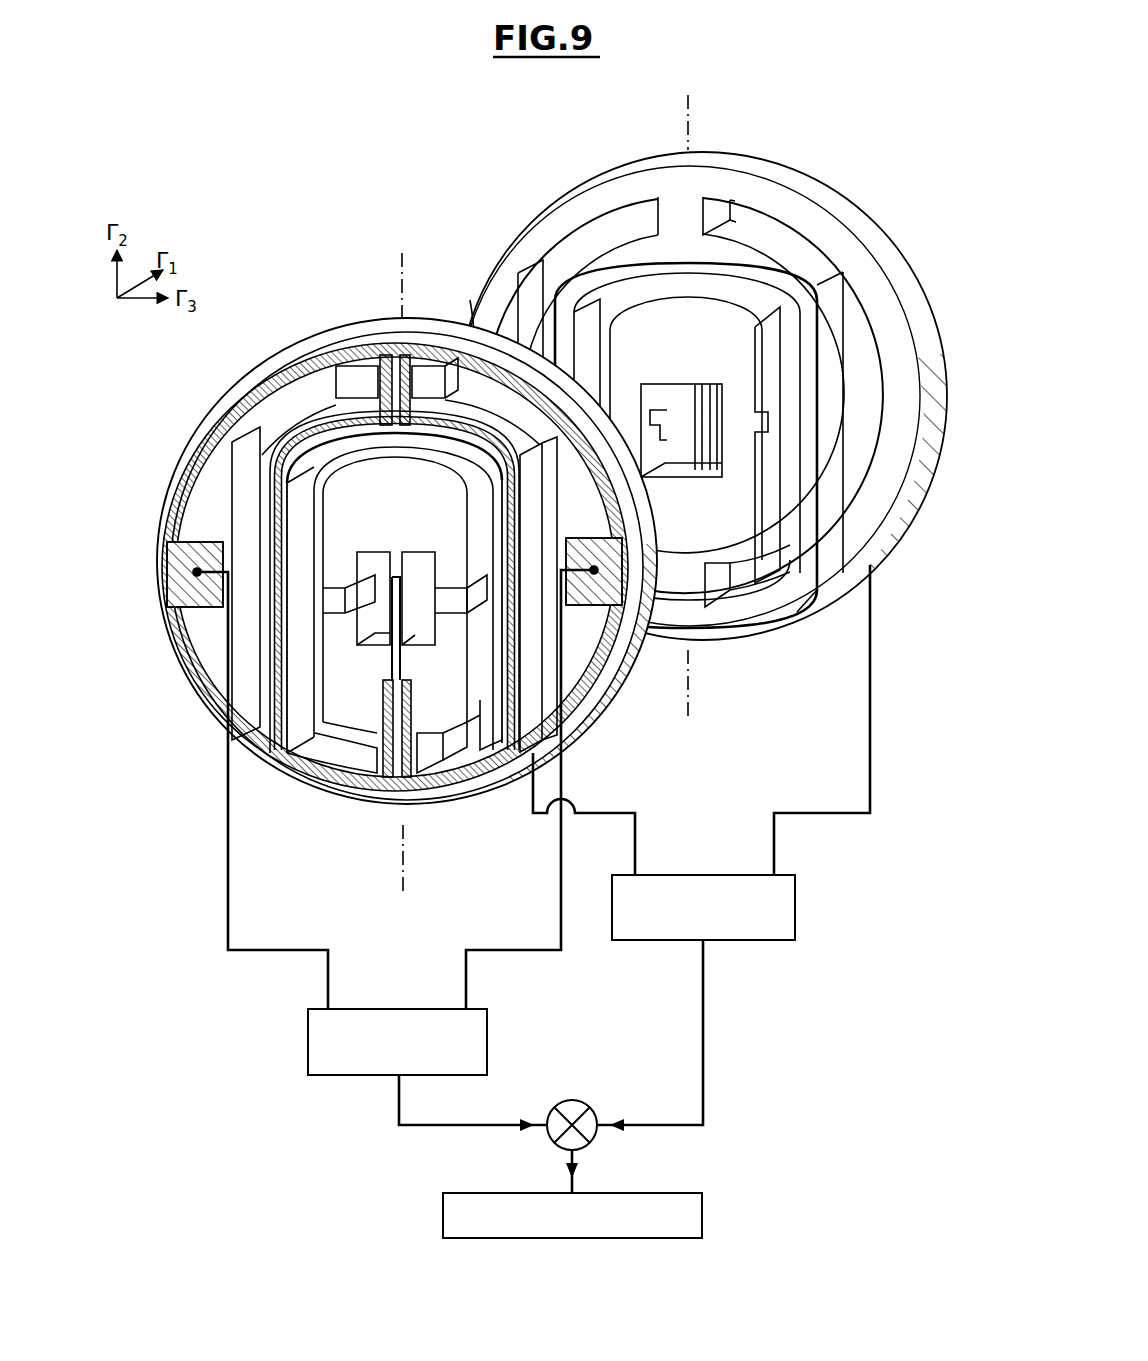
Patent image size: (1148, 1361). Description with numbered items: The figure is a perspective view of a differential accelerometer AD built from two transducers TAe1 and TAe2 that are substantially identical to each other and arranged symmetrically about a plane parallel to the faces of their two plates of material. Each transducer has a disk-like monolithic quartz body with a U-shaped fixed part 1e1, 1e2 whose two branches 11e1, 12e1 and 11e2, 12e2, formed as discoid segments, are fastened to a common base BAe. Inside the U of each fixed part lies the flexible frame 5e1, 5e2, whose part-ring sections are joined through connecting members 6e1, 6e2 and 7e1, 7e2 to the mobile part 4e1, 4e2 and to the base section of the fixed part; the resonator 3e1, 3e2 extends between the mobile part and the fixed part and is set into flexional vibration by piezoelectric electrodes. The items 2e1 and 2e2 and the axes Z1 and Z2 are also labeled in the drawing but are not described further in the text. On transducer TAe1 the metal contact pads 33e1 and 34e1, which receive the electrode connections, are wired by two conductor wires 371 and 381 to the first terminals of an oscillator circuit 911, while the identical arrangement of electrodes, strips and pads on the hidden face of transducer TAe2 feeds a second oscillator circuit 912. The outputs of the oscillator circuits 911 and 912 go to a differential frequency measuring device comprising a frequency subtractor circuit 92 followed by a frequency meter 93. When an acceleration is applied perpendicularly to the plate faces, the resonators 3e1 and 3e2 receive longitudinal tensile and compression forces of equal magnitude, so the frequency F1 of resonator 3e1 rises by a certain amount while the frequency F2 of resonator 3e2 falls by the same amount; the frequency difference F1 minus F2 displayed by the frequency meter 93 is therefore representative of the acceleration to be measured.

The differential accelerometer AD is at (305, 130).
The first transducer TAe1 is at (242, 307).
The second transducer TAe2 is at (503, 140).
The fixed part 1e1 is at (367, 317).
The fixed part 1e2 is at (696, 409).
The first dome shaped member 2e1 is at (400, 455).
The second dome shaped member 2e2 is at (667, 293).
The resonator 3e1 is at (407, 598).
The resonator 3e2 is at (700, 440).
The mobile part 4e1 is at (480, 703).
The mobile part 4e2 is at (770, 530).
The flexible frame 5e1 is at (452, 808).
The flexible frame 5e2 is at (765, 635).
The connecting member 6e1 is at (433, 752).
The connecting member 6e2 is at (712, 590).
The connecting member 7e1 is at (365, 390).
The connecting member 7e2 is at (667, 218).
The discoid branch 11e1 is at (210, 690).
The discoid branch 11e2 is at (485, 300).
The discoid branch 12e1 is at (625, 660).
The discoid branch 12e2 is at (890, 555).
The metal contact pad 33e1 is at (185, 600).
The metal contact pad 34e1 is at (590, 610).
The conductor wire 371 is at (228, 890).
The conductor wire 381 is at (561, 920).
The oscillator circuit 911 is at (308, 1030).
The oscillator circuit 912 is at (795, 893).
The frequency subtractor circuit 92 is at (568, 1105).
The frequency meter 93 is at (702, 1215).
The common base BAe is at (690, 777).
The frequency of first resonator F1 is at (397, 1097).
The frequency of second resonator F2 is at (705, 1085).
The first axis Z1 is at (426, 575).
The second axis Z2 is at (708, 398).